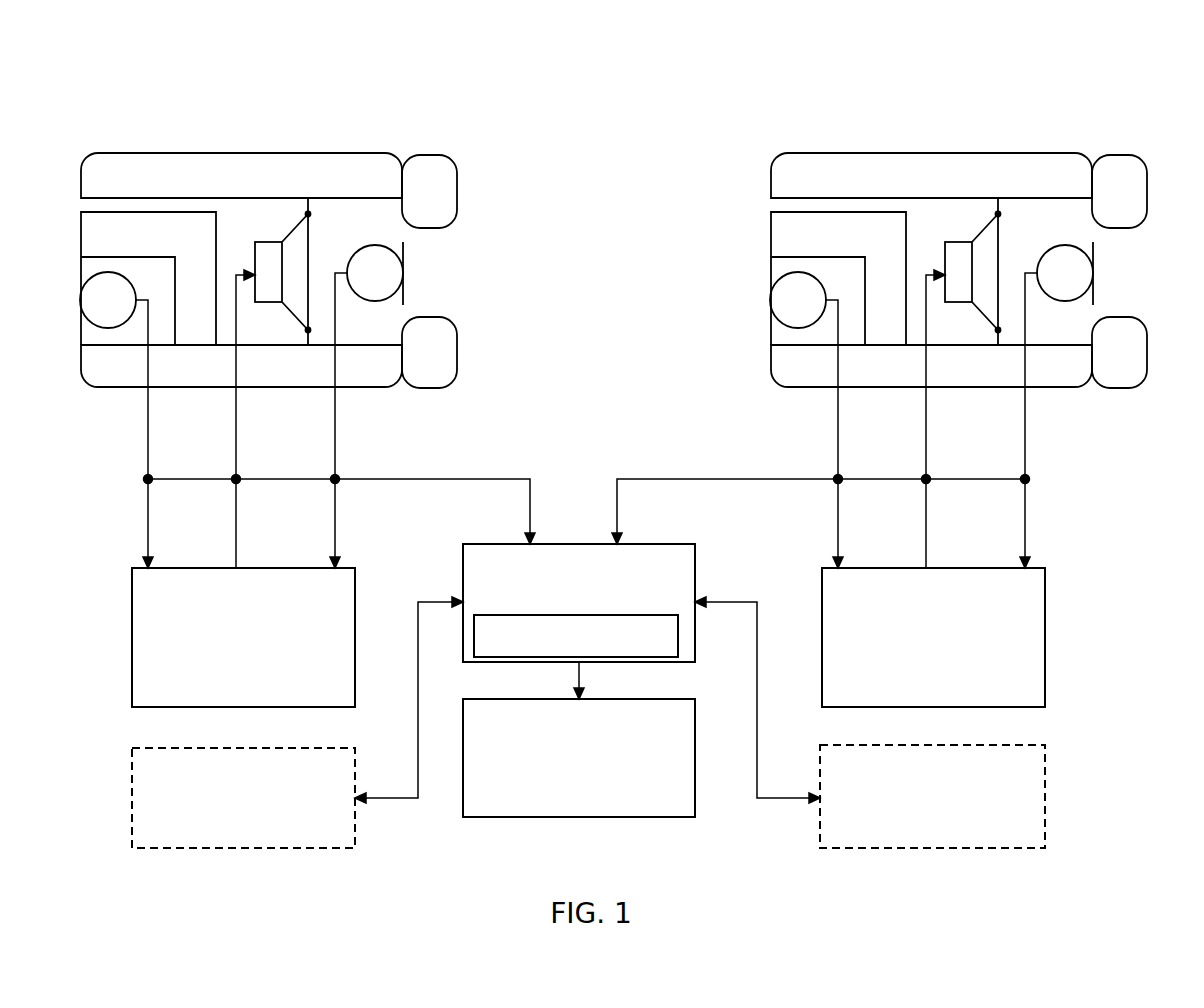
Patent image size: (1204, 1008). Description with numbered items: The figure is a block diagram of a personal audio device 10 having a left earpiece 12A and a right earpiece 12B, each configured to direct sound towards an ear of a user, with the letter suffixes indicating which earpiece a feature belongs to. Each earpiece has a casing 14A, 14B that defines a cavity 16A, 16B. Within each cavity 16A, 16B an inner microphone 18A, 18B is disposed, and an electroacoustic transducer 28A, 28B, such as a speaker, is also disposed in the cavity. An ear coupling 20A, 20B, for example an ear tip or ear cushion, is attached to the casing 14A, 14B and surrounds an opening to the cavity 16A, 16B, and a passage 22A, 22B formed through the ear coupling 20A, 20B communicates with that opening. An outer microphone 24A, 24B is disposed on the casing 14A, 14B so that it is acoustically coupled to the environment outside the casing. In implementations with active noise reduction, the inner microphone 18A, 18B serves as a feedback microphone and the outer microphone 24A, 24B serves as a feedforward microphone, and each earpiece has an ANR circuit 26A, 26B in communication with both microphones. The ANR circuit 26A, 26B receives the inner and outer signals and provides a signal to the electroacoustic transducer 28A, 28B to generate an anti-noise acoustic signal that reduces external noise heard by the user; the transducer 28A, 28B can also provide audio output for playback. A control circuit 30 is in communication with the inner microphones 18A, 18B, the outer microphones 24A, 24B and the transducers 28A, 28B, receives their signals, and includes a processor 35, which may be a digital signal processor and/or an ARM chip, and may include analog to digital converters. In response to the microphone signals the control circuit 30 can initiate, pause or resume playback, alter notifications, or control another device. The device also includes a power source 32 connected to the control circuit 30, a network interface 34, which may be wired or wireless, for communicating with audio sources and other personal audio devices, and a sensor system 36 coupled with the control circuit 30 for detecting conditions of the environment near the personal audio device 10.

The personal audio device 10 is at (637, 95).
The left earpiece 12A is at (128, 102).
The right earpiece 12B is at (981, 208).
The casing 14A is at (241, 270).
The casing 14B is at (931, 270).
The cavity 16A is at (390, 320).
The cavity 16B is at (1101, 321).
The inner microphone 18A is at (375, 273).
The inner microphone 18B is at (1065, 273).
The ear coupling 20A is at (429, 271).
The ear coupling 20B is at (1119, 271).
The passage 22A is at (447, 267).
The passage 22B is at (1105, 236).
The outer microphone 24A is at (108, 300).
The outer microphone 24B is at (798, 300).
The ANR circuit 26A is at (243, 637).
The ANR circuit 26B is at (933, 637).
The electroacoustic transducer 28A is at (283, 271).
The electroacoustic transducer 28B is at (973, 271).
The control circuit 30 is at (579, 603).
The power source 32 is at (579, 758).
The network interface 34 is at (243, 798).
The processor 35 is at (576, 636).
The sensor system 36 is at (932, 796).